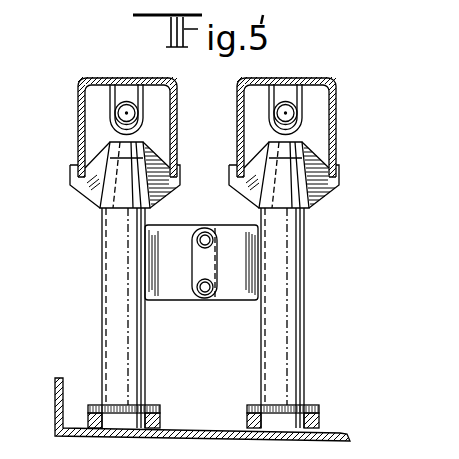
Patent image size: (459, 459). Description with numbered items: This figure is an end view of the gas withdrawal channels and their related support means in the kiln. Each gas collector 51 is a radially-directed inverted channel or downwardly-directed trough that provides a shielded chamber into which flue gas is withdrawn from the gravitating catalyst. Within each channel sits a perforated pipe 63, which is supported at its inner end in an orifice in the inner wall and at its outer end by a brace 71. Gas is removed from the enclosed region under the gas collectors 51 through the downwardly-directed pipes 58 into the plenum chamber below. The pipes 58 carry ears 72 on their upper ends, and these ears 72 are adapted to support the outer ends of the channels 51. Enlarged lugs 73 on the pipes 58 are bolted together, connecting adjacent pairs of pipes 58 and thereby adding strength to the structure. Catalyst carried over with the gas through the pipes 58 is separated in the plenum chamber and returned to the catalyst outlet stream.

The gas collector 51 is at (80, 114).
The perforated pipe 63 is at (127, 101).
The brace 71 is at (147, 96).
The ear 72 is at (96, 190).
The downwardly-directed pipe 58 is at (102, 333).
The enlarged lug 73 is at (241, 225).